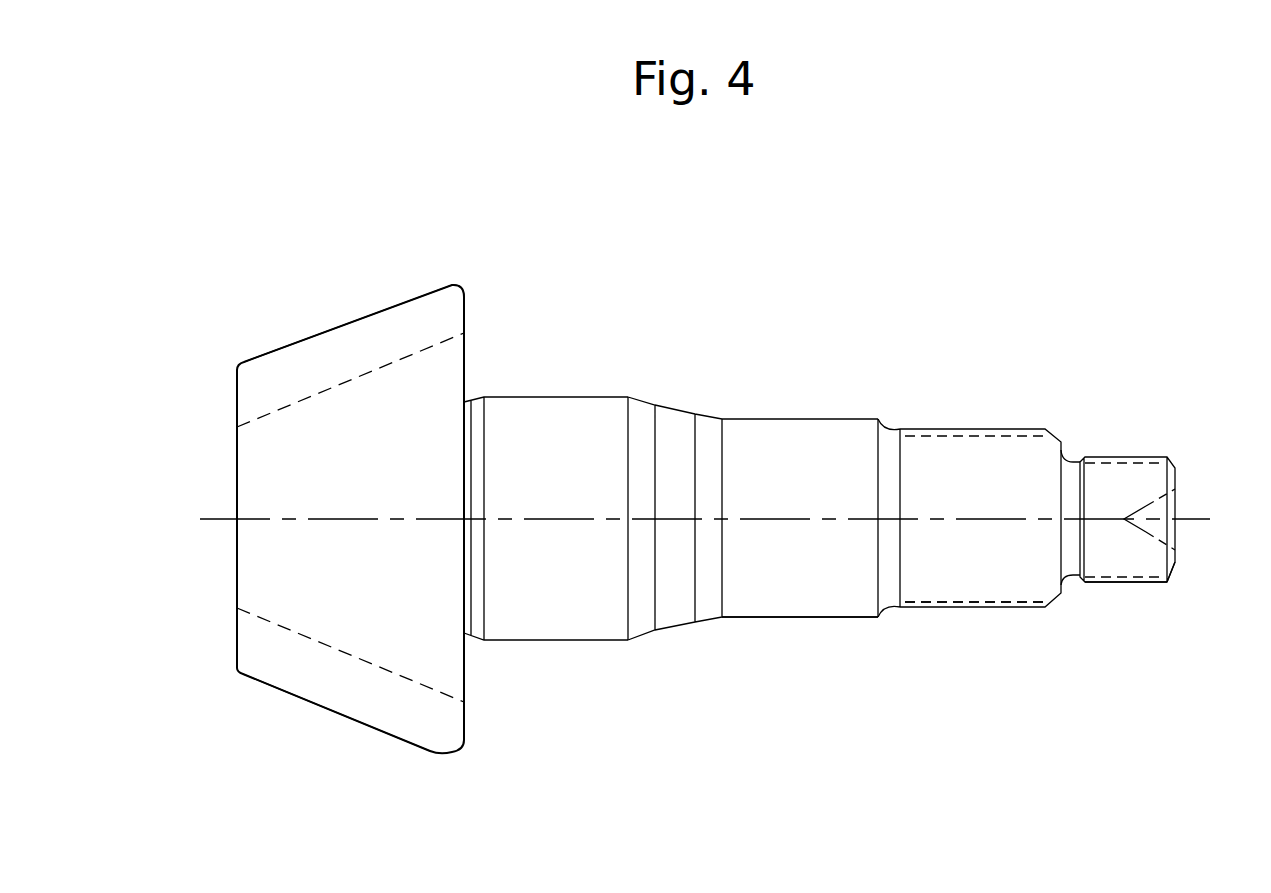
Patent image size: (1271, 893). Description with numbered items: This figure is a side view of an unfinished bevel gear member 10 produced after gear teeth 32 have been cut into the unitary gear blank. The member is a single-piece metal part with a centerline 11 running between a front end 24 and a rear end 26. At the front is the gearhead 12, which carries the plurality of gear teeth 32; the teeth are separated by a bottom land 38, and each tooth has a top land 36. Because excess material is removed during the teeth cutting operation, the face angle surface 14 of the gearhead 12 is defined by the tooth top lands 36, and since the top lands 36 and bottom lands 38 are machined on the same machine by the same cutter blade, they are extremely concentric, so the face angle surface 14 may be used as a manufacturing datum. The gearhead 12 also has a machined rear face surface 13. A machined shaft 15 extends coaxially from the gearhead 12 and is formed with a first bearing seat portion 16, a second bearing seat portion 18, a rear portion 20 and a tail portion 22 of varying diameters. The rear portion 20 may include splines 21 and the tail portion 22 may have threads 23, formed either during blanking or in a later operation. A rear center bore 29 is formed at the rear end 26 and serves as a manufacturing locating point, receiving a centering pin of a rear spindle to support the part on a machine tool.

The unfinished bevel gear member 10 is at (701, 534).
The centerline 11 is at (215, 519).
The gearhead 12 is at (348, 534).
The rear face surface 13 is at (468, 319).
The face angle surface 14 is at (354, 720).
The shaft 15 is at (820, 618).
The first bearing seat portion 16 is at (575, 398).
The second bearing seat portion 18 is at (782, 420).
The rear portion 20 is at (972, 429).
The splines 21 is at (957, 606).
The tail portion 22 is at (1112, 458).
The threads 23 is at (1118, 582).
The front end 24 is at (236, 596).
The rear end 26 is at (1176, 562).
The rear center bore 29 is at (1162, 508).
The gear teeth 32 is at (410, 320).
The top land 36 is at (334, 320).
The bottom land 38 is at (308, 400).